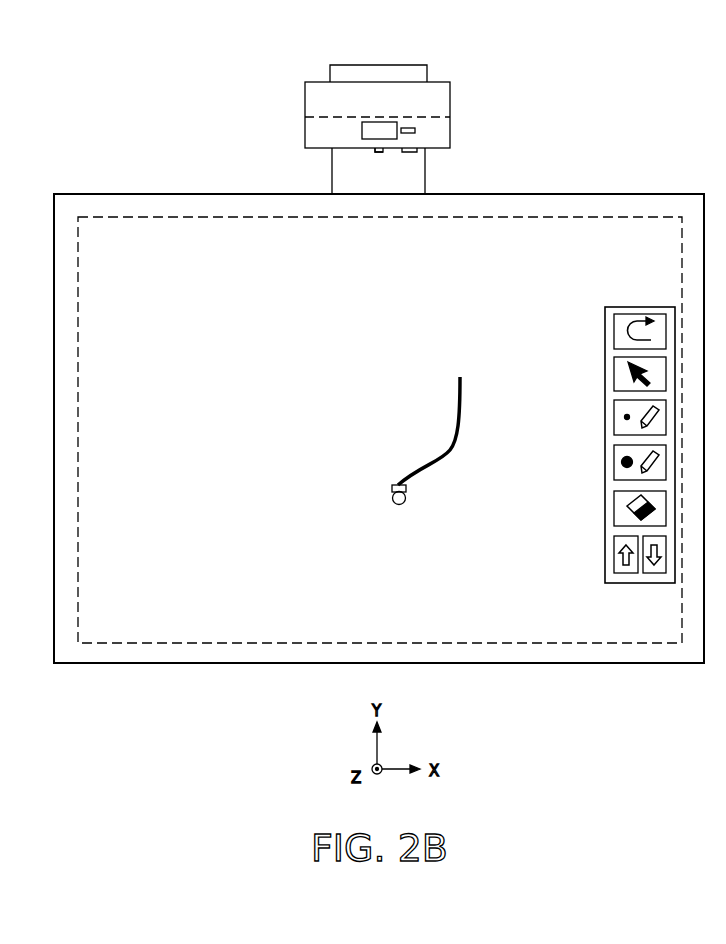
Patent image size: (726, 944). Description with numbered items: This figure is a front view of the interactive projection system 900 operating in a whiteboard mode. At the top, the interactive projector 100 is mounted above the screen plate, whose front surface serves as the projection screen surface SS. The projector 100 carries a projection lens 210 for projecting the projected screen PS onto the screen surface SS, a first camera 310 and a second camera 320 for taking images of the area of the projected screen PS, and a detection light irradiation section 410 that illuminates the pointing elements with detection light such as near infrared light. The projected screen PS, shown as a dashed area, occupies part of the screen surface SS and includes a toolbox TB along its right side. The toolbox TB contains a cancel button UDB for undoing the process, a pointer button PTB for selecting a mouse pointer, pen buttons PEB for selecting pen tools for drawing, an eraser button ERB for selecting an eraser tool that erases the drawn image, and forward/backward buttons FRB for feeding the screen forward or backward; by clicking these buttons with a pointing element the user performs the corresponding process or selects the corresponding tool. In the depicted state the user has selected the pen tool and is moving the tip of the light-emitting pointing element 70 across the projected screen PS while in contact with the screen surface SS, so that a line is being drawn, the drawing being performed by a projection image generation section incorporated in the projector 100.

The interactive projection system 900 is at (640, 128).
The interactive projector 100 is at (450, 95).
The projection lens 210 is at (362, 130).
The first camera 310 is at (415, 131).
The detection light irradiation section 410 is at (358, 152).
The second camera 320 is at (425, 152).
The projection screen surface SS is at (113, 206).
The projected screen PS is at (192, 216).
The toolbox TB is at (620, 307).
The cancel button UDB is at (614, 329).
The pointer button PTB is at (614, 367).
The pen buttons PEB is at (614, 460).
The eraser button ERB is at (614, 501).
The forward/backward buttons FRB is at (619, 550).
The light-emitting pointing element 70 is at (391, 500).